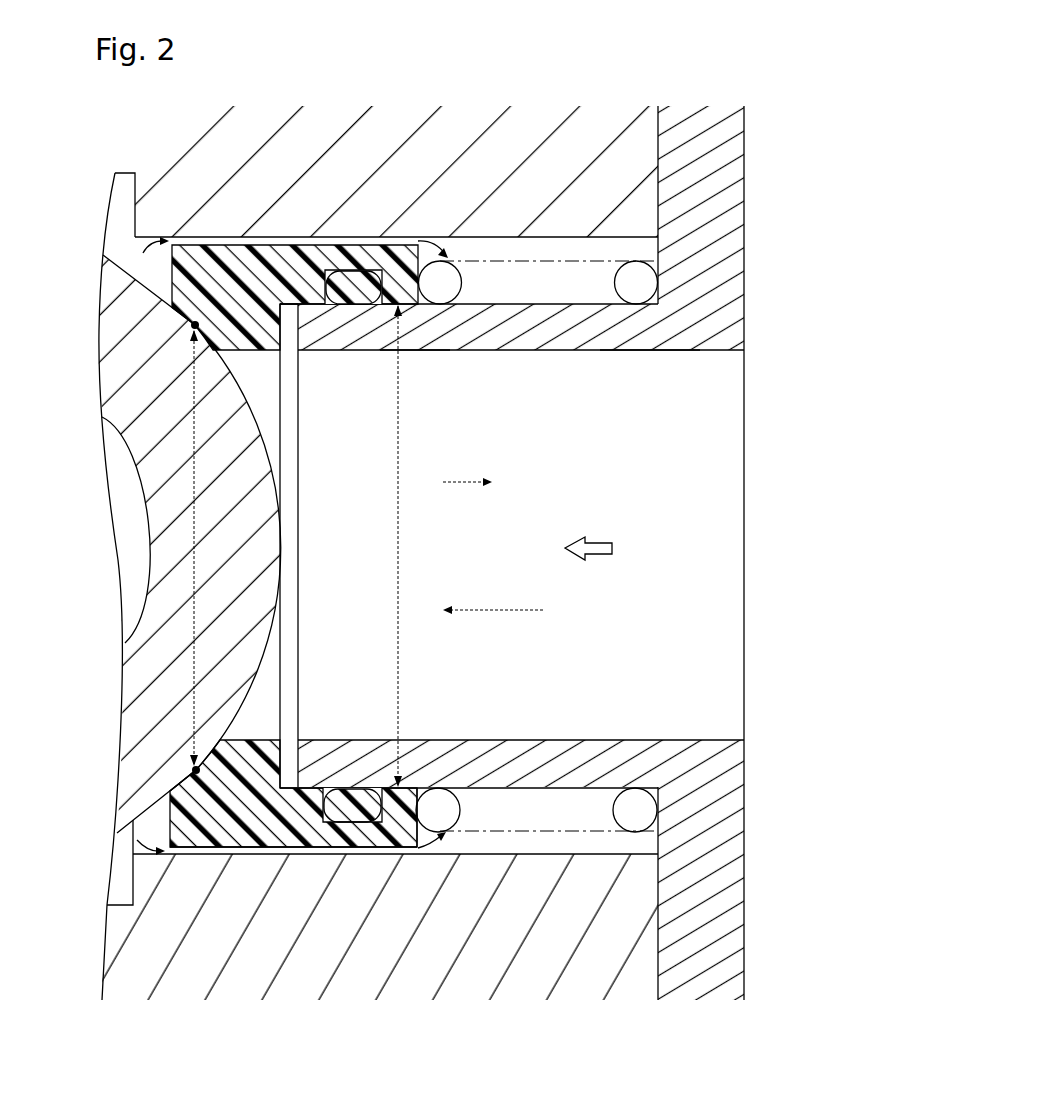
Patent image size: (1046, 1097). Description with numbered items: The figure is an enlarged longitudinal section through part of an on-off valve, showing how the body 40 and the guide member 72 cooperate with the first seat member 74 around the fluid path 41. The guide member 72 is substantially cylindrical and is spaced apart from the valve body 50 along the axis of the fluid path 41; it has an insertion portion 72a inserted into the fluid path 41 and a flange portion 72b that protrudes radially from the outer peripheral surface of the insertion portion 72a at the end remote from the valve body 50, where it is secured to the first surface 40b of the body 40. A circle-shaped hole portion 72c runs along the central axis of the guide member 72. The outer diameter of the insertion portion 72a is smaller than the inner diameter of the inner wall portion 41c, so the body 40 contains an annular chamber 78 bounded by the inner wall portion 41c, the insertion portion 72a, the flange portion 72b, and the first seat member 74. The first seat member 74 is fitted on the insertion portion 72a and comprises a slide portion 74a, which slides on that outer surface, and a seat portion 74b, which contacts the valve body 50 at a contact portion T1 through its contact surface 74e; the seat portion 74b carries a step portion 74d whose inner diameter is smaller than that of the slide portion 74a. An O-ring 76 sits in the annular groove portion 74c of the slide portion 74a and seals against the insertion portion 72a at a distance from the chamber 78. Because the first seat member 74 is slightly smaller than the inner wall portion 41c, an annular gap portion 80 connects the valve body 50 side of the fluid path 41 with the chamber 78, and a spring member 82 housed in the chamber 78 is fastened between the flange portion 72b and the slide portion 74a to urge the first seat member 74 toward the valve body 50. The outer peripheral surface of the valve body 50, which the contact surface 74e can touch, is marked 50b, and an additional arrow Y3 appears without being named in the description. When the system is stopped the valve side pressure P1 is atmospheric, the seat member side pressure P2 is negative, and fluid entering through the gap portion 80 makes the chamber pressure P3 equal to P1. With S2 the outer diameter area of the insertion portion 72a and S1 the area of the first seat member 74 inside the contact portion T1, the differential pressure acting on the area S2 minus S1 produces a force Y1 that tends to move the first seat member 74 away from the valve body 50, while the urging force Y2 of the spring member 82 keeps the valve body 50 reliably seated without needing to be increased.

The body 40 is at (660, 180).
The first surface 40b is at (660, 135).
The fluid path 41 is at (689, 503).
The inner wall portion 41c is at (628, 240).
The valve body 50 is at (149, 586).
The valve body seat surface 50b is at (133, 470).
The guide member 72 is at (705, 102).
The insertion portion 72a is at (450, 345).
The flange portion 72b is at (731, 316).
The hole portion 72c is at (563, 345).
The first seat member 74 is at (269, 808).
The slide portion 74a is at (420, 798).
The seat portion 74b is at (235, 855).
The annular groove portion 74c is at (344, 788).
The step portion 74d is at (264, 740).
The contact surface 74e is at (190, 792).
The O-ring 76 is at (343, 283).
The chamber 78 is at (511, 258).
The gap portion 80 is at (201, 237).
The spring member 82 is at (631, 808).
The valve side pressure P1 is at (157, 267).
The seat member side pressure P2 is at (672, 607).
The chamber pressure P3 is at (541, 285).
The cross-sectional area S1 is at (190, 552).
The outer diameter area S2 is at (396, 537).
The contact portion T1 is at (185, 323).
The force due to differential pressure Y1 is at (467, 469).
The urging force Y2 is at (493, 598).
The direction Y3 is at (608, 551).